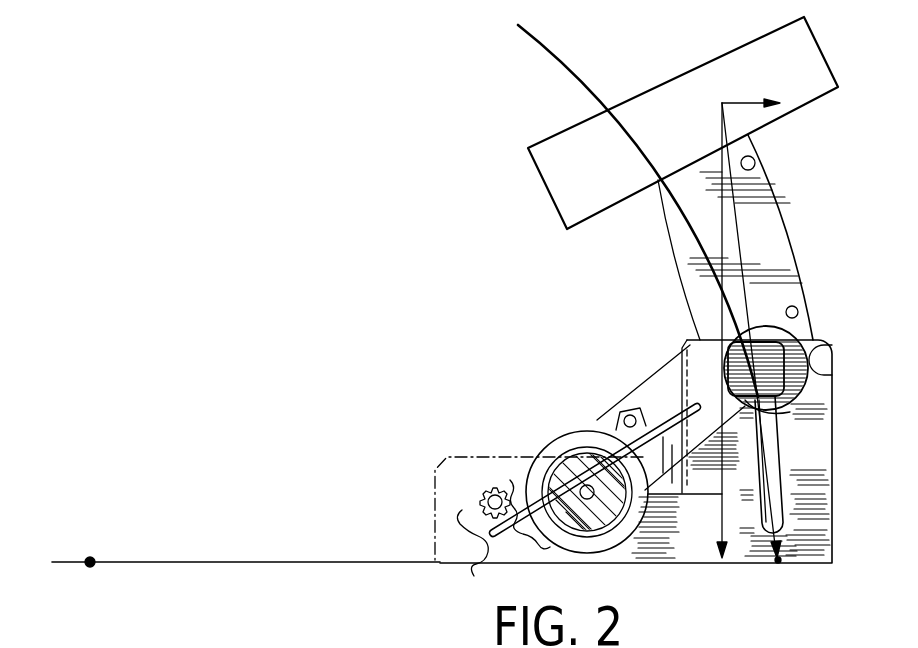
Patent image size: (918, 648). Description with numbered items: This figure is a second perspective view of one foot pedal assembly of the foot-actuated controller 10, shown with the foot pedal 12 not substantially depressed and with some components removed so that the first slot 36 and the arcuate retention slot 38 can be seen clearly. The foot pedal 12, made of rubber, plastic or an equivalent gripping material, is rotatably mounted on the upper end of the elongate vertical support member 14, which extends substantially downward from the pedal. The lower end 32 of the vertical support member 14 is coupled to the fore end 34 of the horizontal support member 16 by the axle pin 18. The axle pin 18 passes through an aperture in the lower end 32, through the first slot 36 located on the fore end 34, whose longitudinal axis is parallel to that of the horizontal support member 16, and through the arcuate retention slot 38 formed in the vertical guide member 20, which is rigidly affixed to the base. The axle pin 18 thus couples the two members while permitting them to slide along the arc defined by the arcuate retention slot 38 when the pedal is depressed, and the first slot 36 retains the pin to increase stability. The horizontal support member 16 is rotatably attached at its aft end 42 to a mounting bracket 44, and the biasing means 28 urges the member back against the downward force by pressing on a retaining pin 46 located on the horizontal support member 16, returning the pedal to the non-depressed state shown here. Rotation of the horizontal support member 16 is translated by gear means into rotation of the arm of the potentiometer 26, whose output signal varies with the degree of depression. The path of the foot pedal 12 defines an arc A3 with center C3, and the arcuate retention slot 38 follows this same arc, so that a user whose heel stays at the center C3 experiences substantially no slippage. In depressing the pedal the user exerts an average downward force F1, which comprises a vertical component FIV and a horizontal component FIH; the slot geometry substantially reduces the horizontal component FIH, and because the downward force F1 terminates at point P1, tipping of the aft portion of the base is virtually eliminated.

The foot-actuated controller 10 is at (512, 315).
The foot pedal 12 is at (808, 45).
The vertical support member 14 is at (765, 212).
The horizontal support member 16 is at (671, 454).
The axle pin 18 is at (810, 343).
The vertical guide member 20 is at (832, 512).
The potentiometer 26 is at (480, 568).
The biasing means 28 is at (653, 413).
The lower end 32 is at (800, 323).
The fore end 34 is at (790, 378).
The first slot 36 is at (783, 412).
The arcuate retention slot 38 is at (790, 460).
The aft end 42 is at (597, 424).
The mounting bracket 44 is at (437, 512).
The retaining pin 46 is at (630, 412).
The arc A3 is at (557, 58).
The center C3 is at (95, 559).
The downward force F1 is at (745, 258).
The vertical component FIV is at (720, 250).
The horizontal component FIH is at (738, 100).
The point P1 is at (779, 564).